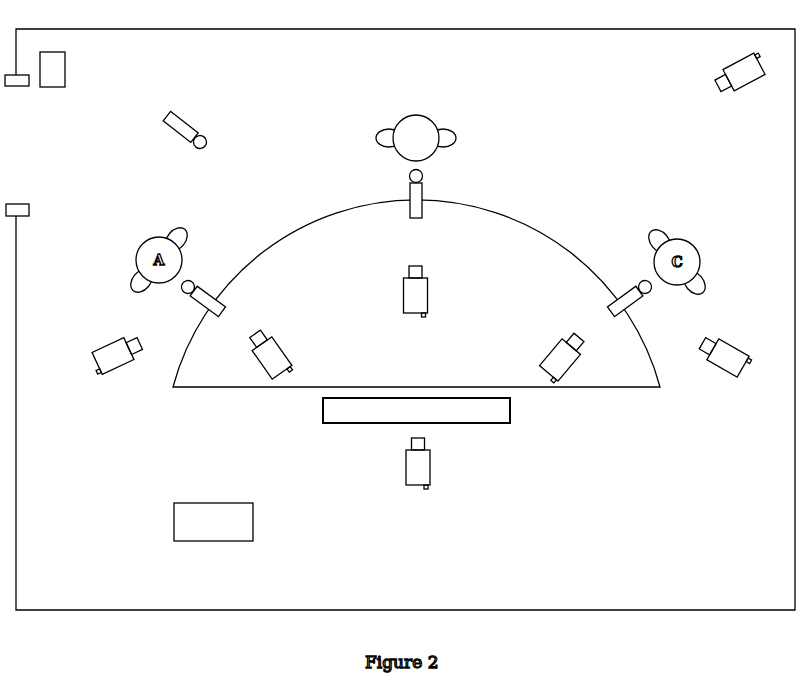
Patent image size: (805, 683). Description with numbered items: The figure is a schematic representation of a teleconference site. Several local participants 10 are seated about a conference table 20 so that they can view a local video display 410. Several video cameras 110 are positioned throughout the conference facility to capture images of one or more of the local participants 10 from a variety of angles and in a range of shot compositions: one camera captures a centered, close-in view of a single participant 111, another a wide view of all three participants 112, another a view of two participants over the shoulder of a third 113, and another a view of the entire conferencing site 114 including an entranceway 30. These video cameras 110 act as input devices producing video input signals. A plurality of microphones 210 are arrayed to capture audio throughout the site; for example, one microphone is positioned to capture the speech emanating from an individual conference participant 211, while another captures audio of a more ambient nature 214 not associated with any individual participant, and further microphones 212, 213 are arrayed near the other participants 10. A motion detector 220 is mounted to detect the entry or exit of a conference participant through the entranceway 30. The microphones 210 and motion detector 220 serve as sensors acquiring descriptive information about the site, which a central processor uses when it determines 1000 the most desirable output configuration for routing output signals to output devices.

The local participants 10 is at (375, 150).
The conference table 20 is at (525, 217).
The entranceway 30 is at (30, 219).
The video cameras 110 is at (123, 373).
The centered, close in view of a single participant 111 is at (433, 298).
The wide view of all three participants 112 is at (434, 464).
The view of two participants over the shoulder of a third 113 is at (715, 370).
The view of the entire conferencing site 114 is at (735, 98).
The microphones 210 is at (448, 209).
The microphone capturing speech of an individual conference participant 211 is at (222, 299).
The microphone 212 is at (425, 188).
The microphone 213 is at (610, 303).
The microphone capturing ambient audio 214 is at (188, 118).
The motion detector 220 is at (65, 90).
The local video display 410 is at (492, 426).
The central processor determining a most desirable output configuration 1000 is at (258, 512).